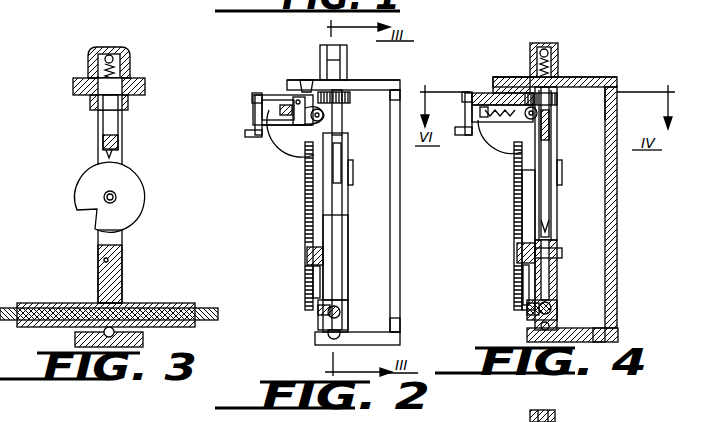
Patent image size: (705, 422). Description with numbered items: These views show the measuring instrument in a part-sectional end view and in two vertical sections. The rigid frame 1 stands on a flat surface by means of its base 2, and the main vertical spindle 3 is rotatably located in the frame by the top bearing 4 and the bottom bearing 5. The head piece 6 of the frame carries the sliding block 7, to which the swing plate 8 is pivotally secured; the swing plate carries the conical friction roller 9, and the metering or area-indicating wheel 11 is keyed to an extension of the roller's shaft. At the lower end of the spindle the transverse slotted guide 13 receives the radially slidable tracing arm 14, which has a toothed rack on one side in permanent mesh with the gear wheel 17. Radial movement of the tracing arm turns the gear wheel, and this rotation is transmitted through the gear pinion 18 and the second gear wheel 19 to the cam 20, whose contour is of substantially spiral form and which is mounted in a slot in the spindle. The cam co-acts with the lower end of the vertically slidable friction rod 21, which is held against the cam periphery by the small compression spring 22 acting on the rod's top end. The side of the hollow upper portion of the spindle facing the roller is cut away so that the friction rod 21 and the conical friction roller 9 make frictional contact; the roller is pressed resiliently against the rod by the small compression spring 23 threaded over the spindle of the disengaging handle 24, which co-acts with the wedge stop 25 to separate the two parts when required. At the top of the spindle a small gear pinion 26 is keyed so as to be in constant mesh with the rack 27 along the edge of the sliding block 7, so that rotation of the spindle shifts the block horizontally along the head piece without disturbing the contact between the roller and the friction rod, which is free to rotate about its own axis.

In FIG. 2, the rigid frame 1 is at (343, 212).
In FIG. 4, the rigid frame 1 is at (615, 192).
In FIG. 3, the base 2 is at (143, 340).
In FIG. 2, the base 2 is at (382, 336).
In FIG. 4, the base 2 is at (596, 344).
In FIG. 3, the main vertical spindle 3 is at (122, 272).
In FIG. 2, the main vertical spindle 3 is at (343, 282).
In FIG. 4, the main vertical spindle 3 is at (553, 291).
In FIG. 3, the top bearing 4 is at (121, 52).
In FIG. 2, the top bearing 4 is at (320, 57).
In FIG. 4, the top bearing 4 is at (558, 60).
In FIG. 2, the bottom bearing 5 is at (328, 333).
In FIG. 4, the bottom bearing 5 is at (536, 331).
In FIG. 3, the head piece 6 is at (145, 82).
In FIG. 2, the head piece 6 is at (398, 82).
In FIG. 4, the head piece 6 is at (602, 84).
In FIG. 2, the sliding block 7 is at (270, 95).
In FIG. 4, the sliding block 7 is at (478, 93).
In FIG. 2, the swing plate 8 is at (300, 116).
In FIG. 4, the swing plate 8 is at (508, 121).
In FIG. 2, the conical friction roller 9 is at (317, 122).
In FIG. 4, the conical friction roller 9 is at (526, 121).
In FIG. 2, the metering or area-indicating wheel 11 is at (322, 124).
In FIG. 4, the metering or area-indicating wheel 11 is at (600, 104).
In FIG. 3, the transverse slotted guide 13 is at (180, 304).
In FIG. 2, the transverse slotted guide 13 is at (348, 312).
In FIG. 4, the transverse slotted guide 13 is at (557, 299).
In FIG. 2, the tracing arm 14 is at (318, 313).
In FIG. 4, the tracing arm 14 is at (527, 313).
In FIG. 2, the gear wheel 17 is at (313, 281).
In FIG. 4, the gear wheel 17 is at (523, 283).
In FIG. 2, the gear pinion 18 is at (308, 257).
In FIG. 4, the gear pinion 18 is at (517, 255).
In FIG. 2, the second gear wheel 19 is at (305, 185).
In FIG. 4, the second gear wheel 19 is at (514, 207).
In FIG. 3, the cam 20 is at (80, 181).
In FIG. 2, the cam 20 is at (348, 188).
In FIG. 4, the cam 20 is at (552, 185).
In FIG. 3, the friction rod 21 is at (103, 129).
In FIG. 2, the friction rod 21 is at (344, 108).
In FIG. 4, the friction rod 21 is at (556, 112).
In FIG. 3, the small compression spring 22 is at (100, 70).
In FIG. 4, the small compression spring 22 is at (537, 56).
In FIG. 2, the small compression spring 23 is at (285, 117).
In FIG. 4, the small compression spring 23 is at (500, 137).
In FIG. 2, the disengaging handle 24 is at (252, 132).
In FIG. 4, the disengaging handle 24 is at (468, 135).
In FIG. 2, the wedge stop 25 is at (255, 100).
In FIG. 4, the wedge stop 25 is at (466, 94).
In FIG. 3, the small gear pinion 26 is at (90, 103).
In FIG. 2, the small gear pinion 26 is at (348, 100).
In FIG. 4, the small gear pinion 26 is at (558, 100).
In FIG. 4, the rack 27 is at (520, 78).